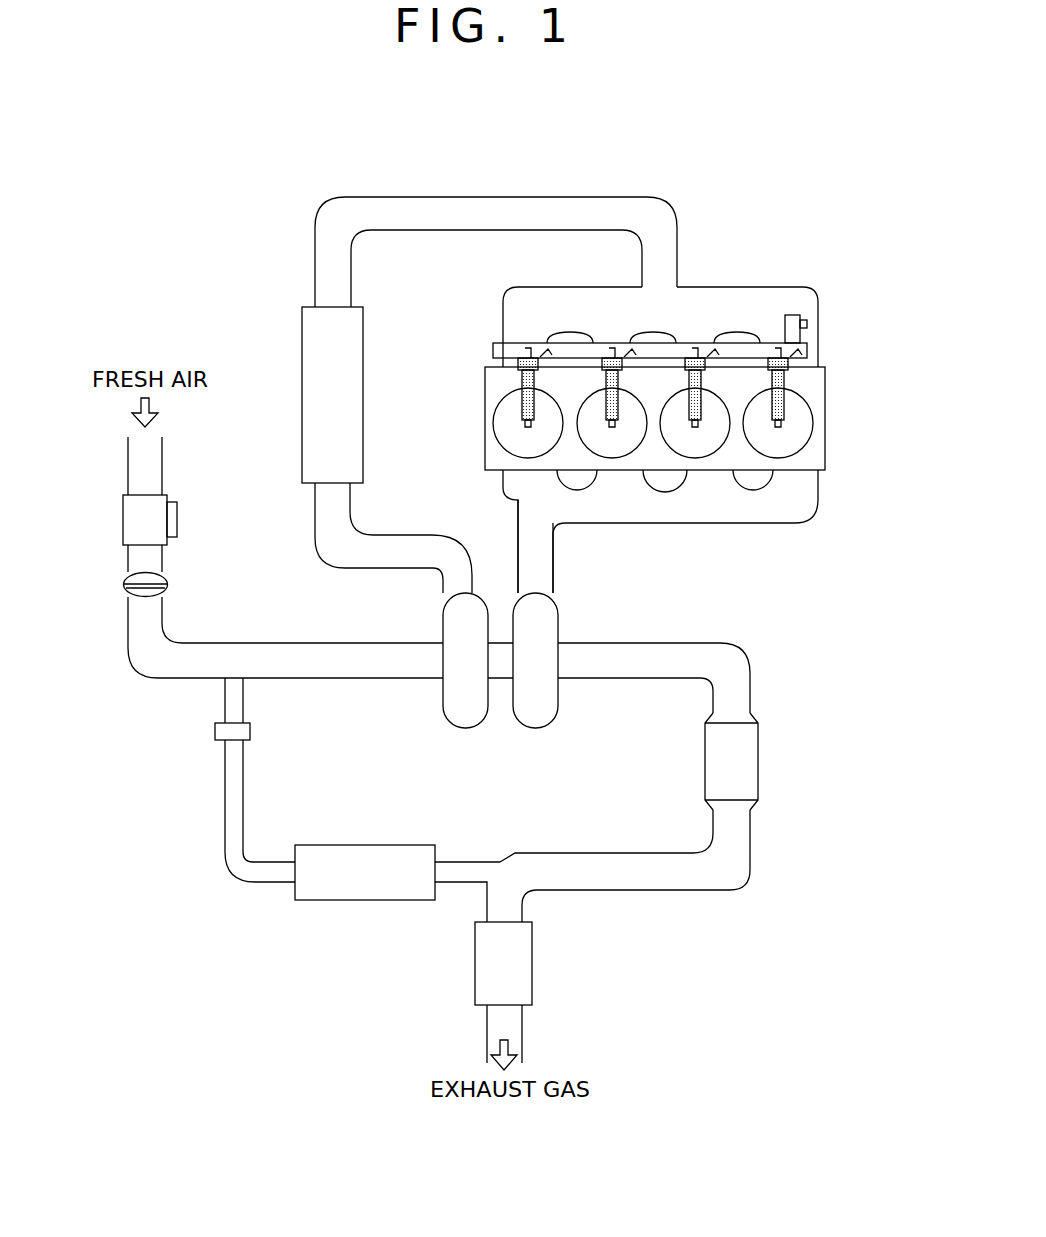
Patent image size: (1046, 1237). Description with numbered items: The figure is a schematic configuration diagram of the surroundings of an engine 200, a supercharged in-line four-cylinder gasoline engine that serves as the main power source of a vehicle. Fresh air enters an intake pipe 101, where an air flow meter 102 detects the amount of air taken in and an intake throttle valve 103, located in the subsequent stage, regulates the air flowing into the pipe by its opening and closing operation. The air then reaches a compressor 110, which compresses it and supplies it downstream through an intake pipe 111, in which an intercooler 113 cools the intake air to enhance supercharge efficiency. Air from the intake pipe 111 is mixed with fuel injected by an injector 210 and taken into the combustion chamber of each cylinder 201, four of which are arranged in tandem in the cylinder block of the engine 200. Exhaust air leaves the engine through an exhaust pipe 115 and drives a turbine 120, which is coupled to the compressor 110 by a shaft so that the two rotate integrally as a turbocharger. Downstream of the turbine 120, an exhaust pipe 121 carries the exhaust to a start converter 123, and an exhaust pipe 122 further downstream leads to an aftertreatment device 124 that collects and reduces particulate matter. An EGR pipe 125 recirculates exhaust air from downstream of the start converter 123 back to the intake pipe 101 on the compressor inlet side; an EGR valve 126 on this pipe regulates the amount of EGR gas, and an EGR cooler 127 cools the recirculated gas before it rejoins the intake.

The intake pipe 101 is at (328, 655).
The air flow meter 102 is at (175, 520).
The intake throttle valve 103 is at (165, 580).
The compressor 110 is at (465, 728).
The intake pipe 111 is at (497, 210).
The intercooler 113 is at (310, 302).
The exhaust pipe 115 is at (543, 560).
The turbine 120 is at (537, 728).
The exhaust pipe 121 is at (622, 652).
The exhaust pipe 122 is at (722, 858).
The start converter 123 is at (700, 745).
The aftertreatment device 124 is at (535, 960).
The EGR pipe 125 is at (232, 795).
The EGR valve 126 is at (258, 725).
The EGR cooler 127 is at (362, 845).
The engine 200 is at (700, 375).
The cylinder 201 is at (693, 447).
The injector 210 is at (612, 428).